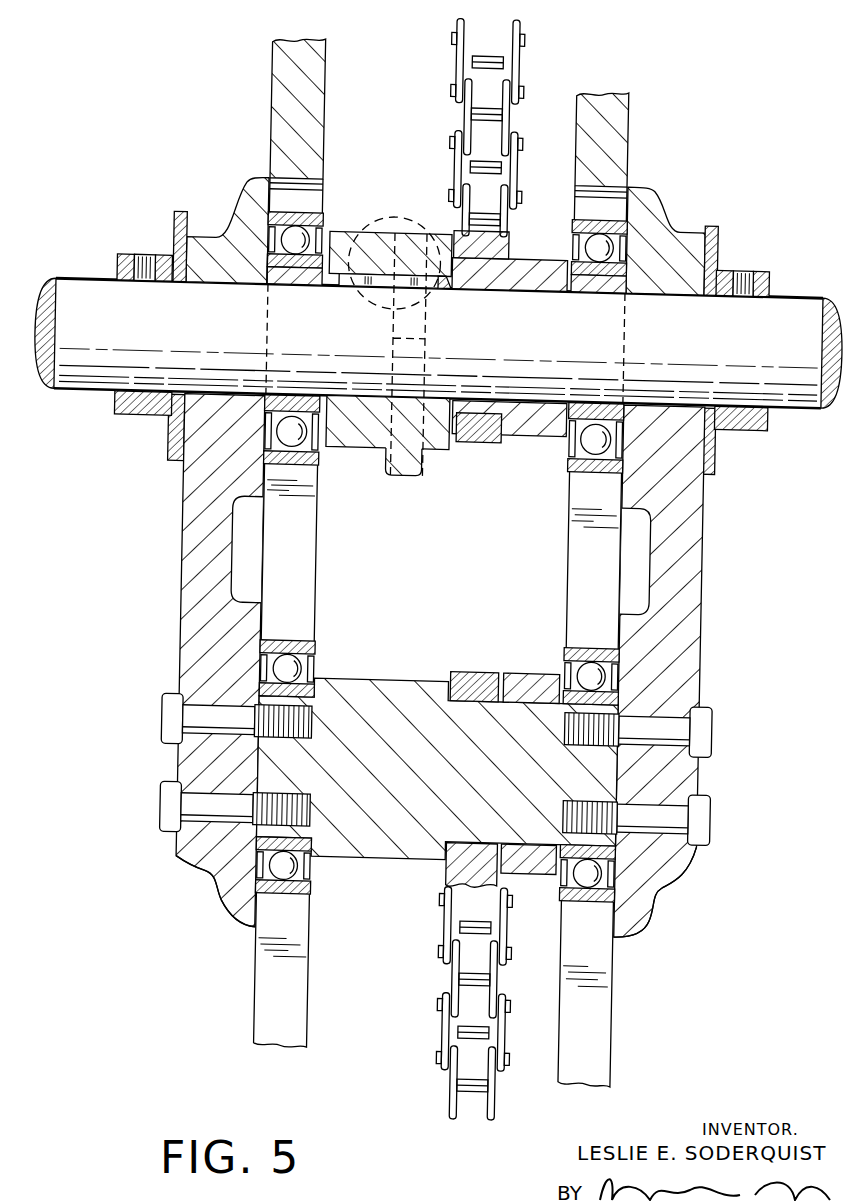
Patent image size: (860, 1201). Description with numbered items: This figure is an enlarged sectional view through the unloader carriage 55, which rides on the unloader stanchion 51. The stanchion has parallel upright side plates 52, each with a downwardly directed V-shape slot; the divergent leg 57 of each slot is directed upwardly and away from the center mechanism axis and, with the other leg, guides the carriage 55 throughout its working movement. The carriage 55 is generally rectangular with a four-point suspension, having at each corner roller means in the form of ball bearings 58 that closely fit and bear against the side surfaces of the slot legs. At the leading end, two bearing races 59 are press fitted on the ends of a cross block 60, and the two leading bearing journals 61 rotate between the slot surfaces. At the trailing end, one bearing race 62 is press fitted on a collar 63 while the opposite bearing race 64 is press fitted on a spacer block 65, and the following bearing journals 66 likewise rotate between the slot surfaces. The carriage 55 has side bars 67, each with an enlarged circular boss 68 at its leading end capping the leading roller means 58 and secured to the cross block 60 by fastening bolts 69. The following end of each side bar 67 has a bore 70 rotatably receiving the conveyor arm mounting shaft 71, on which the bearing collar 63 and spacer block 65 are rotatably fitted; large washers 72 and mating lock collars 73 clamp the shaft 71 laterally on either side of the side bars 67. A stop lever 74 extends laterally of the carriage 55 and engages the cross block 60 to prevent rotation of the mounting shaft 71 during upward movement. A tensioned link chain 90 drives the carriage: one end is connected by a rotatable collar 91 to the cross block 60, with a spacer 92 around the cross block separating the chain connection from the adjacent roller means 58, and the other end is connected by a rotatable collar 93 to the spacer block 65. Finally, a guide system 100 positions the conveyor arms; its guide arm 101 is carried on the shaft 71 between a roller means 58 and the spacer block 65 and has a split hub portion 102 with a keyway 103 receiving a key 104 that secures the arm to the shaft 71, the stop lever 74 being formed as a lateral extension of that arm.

The unloader stanchion 51 is at (645, 122).
The side plate 52 is at (258, 958).
The carriage 55 is at (438, 569).
The divergent leg 57 is at (297, 545).
The ball bearing 58 is at (308, 238).
The bearing race 59 is at (317, 862).
The cross block 60 is at (413, 703).
The leading bearing journal 61 is at (315, 647).
The bearing race 62 is at (312, 280).
The collar 63 is at (267, 285).
The bearing race 64 is at (595, 283).
The spacer block 65 is at (547, 282).
The following bearing journal 66 is at (322, 210).
The side bar 67 is at (190, 543).
The circular boss 68 is at (225, 897).
The fastening bolt 69 is at (167, 722).
The bore 70 is at (213, 285).
The mounting shaft 71 is at (97, 370).
The washer 72 is at (178, 222).
The lock collar 73 is at (122, 263).
The stop lever 74 is at (390, 230).
The link chain 90 is at (437, 63).
The rotatable collar 91 is at (460, 868).
The spacer 92 is at (527, 858).
The rotatable collar 93 is at (502, 245).
The guide system 100 is at (425, 482).
The guide arm 101 is at (385, 465).
The split hub portion 102 is at (400, 243).
The keyway 103 is at (338, 280).
The key 104 is at (435, 282).